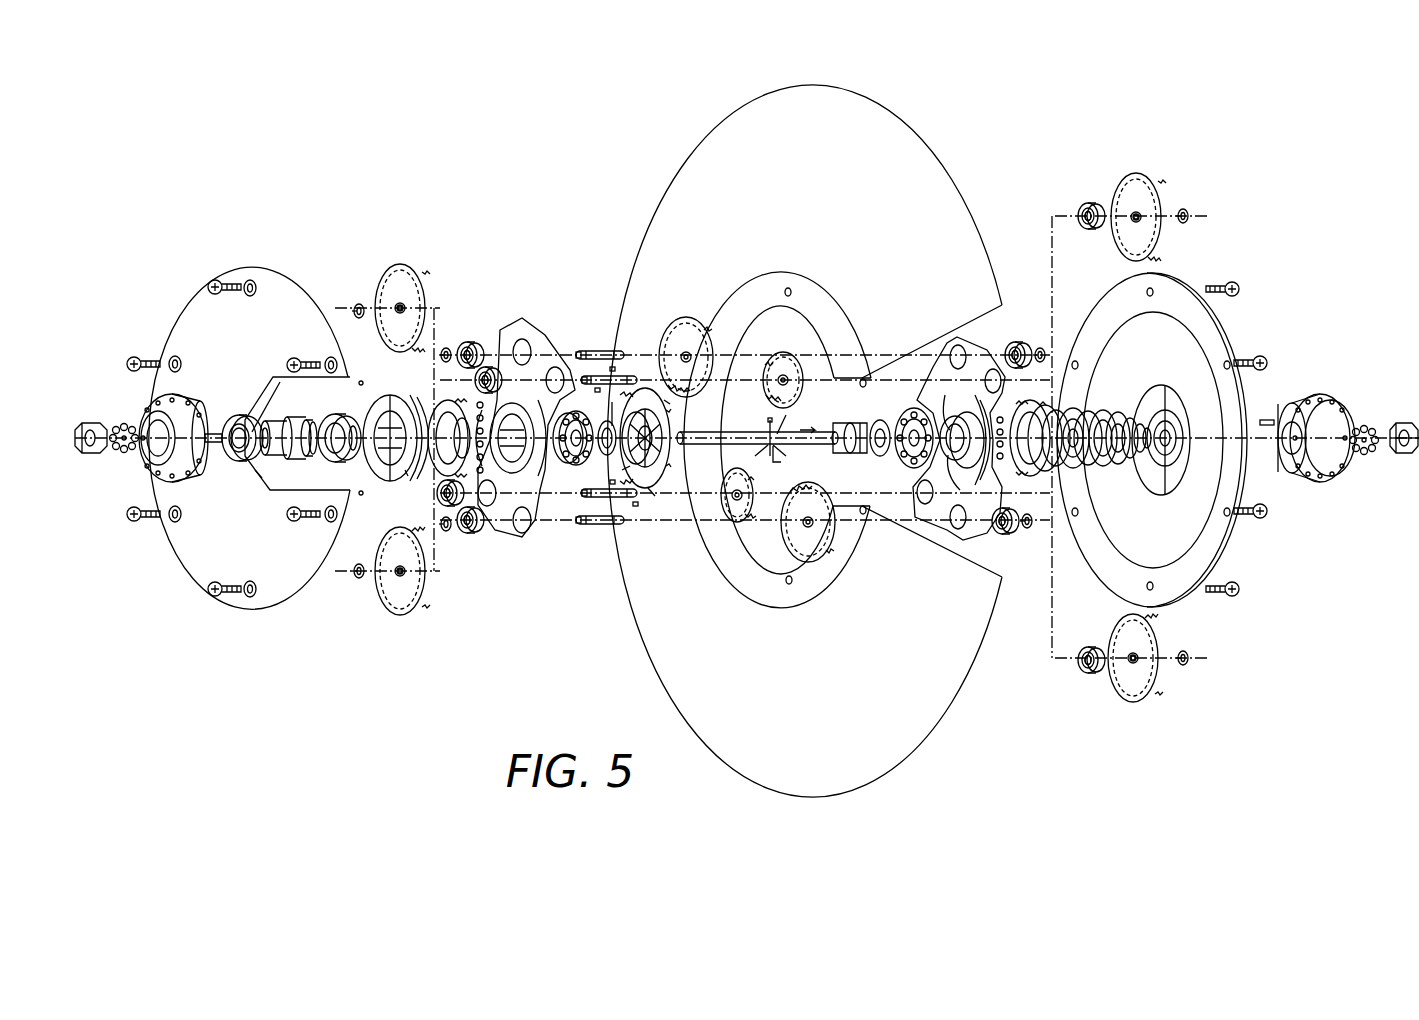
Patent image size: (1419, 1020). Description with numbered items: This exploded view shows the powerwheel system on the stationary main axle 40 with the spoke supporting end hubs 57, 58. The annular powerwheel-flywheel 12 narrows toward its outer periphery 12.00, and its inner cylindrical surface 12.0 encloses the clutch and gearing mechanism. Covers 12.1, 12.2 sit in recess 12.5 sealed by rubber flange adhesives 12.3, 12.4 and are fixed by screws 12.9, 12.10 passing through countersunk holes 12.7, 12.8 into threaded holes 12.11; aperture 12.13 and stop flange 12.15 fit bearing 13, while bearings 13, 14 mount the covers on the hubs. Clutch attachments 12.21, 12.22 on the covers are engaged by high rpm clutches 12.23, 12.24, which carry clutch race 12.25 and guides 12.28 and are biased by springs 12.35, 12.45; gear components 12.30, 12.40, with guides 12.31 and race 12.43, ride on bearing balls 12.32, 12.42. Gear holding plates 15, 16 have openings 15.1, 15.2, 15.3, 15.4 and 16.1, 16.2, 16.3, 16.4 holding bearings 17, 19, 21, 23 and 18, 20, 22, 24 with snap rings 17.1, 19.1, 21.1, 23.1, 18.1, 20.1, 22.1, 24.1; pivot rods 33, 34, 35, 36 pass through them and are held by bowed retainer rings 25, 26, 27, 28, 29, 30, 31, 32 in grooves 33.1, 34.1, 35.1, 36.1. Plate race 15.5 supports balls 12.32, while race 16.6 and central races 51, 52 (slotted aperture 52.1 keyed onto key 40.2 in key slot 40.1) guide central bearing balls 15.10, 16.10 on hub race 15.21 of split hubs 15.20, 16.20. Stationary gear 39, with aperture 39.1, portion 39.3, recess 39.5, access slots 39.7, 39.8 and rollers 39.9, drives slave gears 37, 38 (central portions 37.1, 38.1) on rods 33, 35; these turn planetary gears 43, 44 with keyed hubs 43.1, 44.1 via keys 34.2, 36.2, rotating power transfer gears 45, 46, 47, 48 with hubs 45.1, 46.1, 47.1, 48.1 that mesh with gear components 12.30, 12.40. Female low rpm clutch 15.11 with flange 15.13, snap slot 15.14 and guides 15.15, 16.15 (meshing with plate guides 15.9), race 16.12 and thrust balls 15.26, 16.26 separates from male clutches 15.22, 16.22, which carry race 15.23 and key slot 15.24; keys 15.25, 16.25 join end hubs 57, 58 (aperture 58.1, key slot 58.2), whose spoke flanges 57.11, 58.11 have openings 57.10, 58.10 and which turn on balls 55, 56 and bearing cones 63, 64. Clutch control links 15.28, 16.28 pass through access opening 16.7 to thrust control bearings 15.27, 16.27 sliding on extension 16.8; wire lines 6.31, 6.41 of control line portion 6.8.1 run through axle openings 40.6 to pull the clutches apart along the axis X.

The powerwheel-flywheel 12 is at (812, 184).
The outer periphery 12.00 is at (912, 126).
The inner diameter cylindrical surface 12.0 is at (750, 343).
The powerwheel cover 12.1 is at (185, 322).
The powerwheel cover 12.2 is at (1235, 333).
The rubber flange adhesive 12.3 is at (352, 375).
The rubber flange adhesive 12.4 is at (1120, 555).
The recess 12.5 is at (732, 570).
The holes 12.7 is at (254, 290).
The holes 12.8 is at (1153, 295).
The screws 12.9 is at (280, 514).
The screws 12.10 is at (1240, 588).
The threaded holes 12.11 is at (784, 292).
The central aperture 12.13 is at (270, 393).
The stop flange 12.15 is at (240, 462).
The clutch attachment 12.21 is at (272, 378).
The clutch attachment 12.22 is at (1175, 482).
The high rpm clutch 12.23 is at (376, 400).
The high rpm clutch 12.24 is at (1118, 458).
The clutch race 12.25 is at (354, 486).
The high rpm clutch guides 12.28 is at (1120, 465).
The powerwheel gear component 12.30 is at (438, 394).
The gear component guides 12.31 is at (462, 438).
The bearing balls 12.32 is at (472, 434).
The clutch engaging compression spring 12.35 is at (404, 392).
The powerwheel gear component 12.40 is at (1020, 490).
The bearing balls 12.42 is at (1001, 450).
The gear component race 12.43 is at (1023, 449).
The clutch engaging compression spring 12.45 is at (1050, 468).
The ball bearing 13 is at (230, 452).
The ball bearing 14 is at (1172, 414).
The gear holding plate 15 is at (542, 345).
The opening 15.1 is at (516, 345).
The opening 15.2 is at (546, 375).
The opening 15.3 is at (528, 534).
The opening 15.4 is at (490, 505).
The bearing race 15.5 is at (511, 432).
The gear plate guides 15.9 is at (512, 464).
The central bearing balls 15.10 is at (576, 466).
The female low rpm clutch 15.11 is at (346, 458).
The flange 15.13 is at (336, 414).
The link snap slot 15.14 is at (332, 417).
The guides 15.15 is at (308, 418).
The plate hub 15.20 is at (280, 418).
The hub race 15.21 is at (313, 455).
The male low rpm clutch 15.22 is at (262, 478).
The cylindrical race 15.23 is at (266, 452).
The key slot 15.24 is at (287, 430).
The key 15.25 is at (206, 432).
The thrust bearing balls 15.26 is at (353, 452).
The thrust type clutch control bearing 15.27 is at (571, 452).
The clutch control link 15.28 is at (408, 476).
The gear holding plate 16 is at (945, 340).
The opening 16.1 is at (950, 352).
The opening 16.2 is at (981, 375).
The opening 16.3 is at (950, 514).
The opening 16.4 is at (916, 505).
The bearing race 16.6 is at (950, 472).
The access opening 16.7 is at (970, 439).
The gear holding plate extension 16.8 is at (933, 404).
The central bearing balls 16.10 is at (912, 470).
The clutch race 16.12 is at (1091, 428).
The guides 16.15 is at (1113, 451).
The plate hub 16.20 is at (1114, 460).
The male low rpm clutch 16.22 is at (1106, 410).
The key 16.25 is at (1262, 418).
The thrust bearing balls 16.26 is at (1076, 408).
The thrust type clutch control bearing 16.27 is at (905, 403).
The clutch control link 16.28 is at (1040, 395).
The bearing 17 is at (470, 348).
The snap ring 17.1 is at (468, 340).
The bearing 18 is at (1005, 352).
The snap ring 18.1 is at (1022, 365).
The bearing 19 is at (474, 379).
The snap ring 19.1 is at (488, 376).
The bearing 20 is at (1078, 210).
The snap ring 20.1 is at (1086, 226).
The bearing 21 is at (470, 532).
The snap ring 21.1 is at (467, 545).
The bearing 22 is at (998, 534).
The snap ring 22.1 is at (1008, 530).
The bearing 23 is at (455, 490).
The snap ring 23.1 is at (452, 490).
The bearing 24 is at (1080, 654).
The snap ring 24.1 is at (1086, 670).
The bowed retainer ring 25 is at (444, 348).
The bowed retainer ring 26 is at (1040, 347).
The bowed retainer ring 27 is at (357, 318).
The bowed retainer ring 28 is at (1189, 221).
The bowed retainer ring 29 is at (445, 531).
The bowed retainer ring 30 is at (1029, 517).
The bowed retainer ring 31 is at (353, 575).
The bowed retainer ring 32 is at (1186, 651).
The pivot rod 33 is at (603, 350).
The groove 33.1 is at (570, 346).
The pivot rod 34 is at (609, 372).
The groove 34.1 is at (588, 385).
The key 34.2 is at (585, 399).
The pivot rod 35 is at (603, 525).
The groove 35.1 is at (578, 526).
The pivot rod 36 is at (612, 498).
The groove 36.1 is at (583, 497).
The key 36.2 is at (637, 506).
The slave gear 37 is at (690, 343).
The gear hub 37.1 is at (682, 364).
The slave gear 38 is at (814, 516).
The gear hub 38.1 is at (812, 530).
The stationary power gear 39 is at (645, 438).
The central aperture 39.1 is at (653, 436).
The gear ring 39.3 is at (628, 455).
The recess 39.5 is at (670, 404).
The radial access slot 39.7 is at (612, 411).
The radial access slot 39.8 is at (611, 470).
The pivoted concave rollers 39.9 is at (655, 496).
The main axle 40 is at (738, 432).
The key slot 40.1 is at (780, 420).
The key 40.2 is at (766, 418).
The openings 40.6 is at (810, 425).
The planetary gear 43 is at (802, 362).
The keyed hub 43.1 is at (780, 368).
The planetary gear 44 is at (722, 484).
The keyed hub 44.1 is at (740, 508).
The power transfer gear 45 is at (382, 305).
The keyed hub 45.1 is at (398, 312).
The power transfer gear 46 is at (1122, 202).
The keyed hub 46.1 is at (1134, 222).
The power transfer gear 47 is at (402, 540).
The keyed hub 47.1 is at (398, 574).
The power transfer gear 48 is at (1120, 682).
The keyed hub 48.1 is at (1122, 654).
The central stationary race 51 is at (608, 428).
The central stationary race 52 is at (878, 455).
The slotted aperture 52.1 is at (878, 420).
The balls 55 is at (124, 424).
The balls 56 is at (1363, 455).
The spoke supporting end hub 57 is at (146, 462).
The openings 57.10 is at (172, 398).
The spoke flange 57.11 is at (174, 479).
The spoke supporting end hub 58 is at (1335, 470).
The keyed round aperture 58.1 is at (1283, 455).
The key slot 58.2 is at (1293, 398).
The openings 58.10 is at (1314, 396).
The spoke flange 58.11 is at (1326, 402).
The clutch control wire lines 6.31 is at (747, 452).
The clutch control wire lines 6.41 is at (776, 462).
The clutch control line bottom portion 6.8.1 is at (853, 420).
The bearing cone 63 is at (89, 422).
The bearing cone 64 is at (1400, 420).
The X axis X is at (1392, 411).